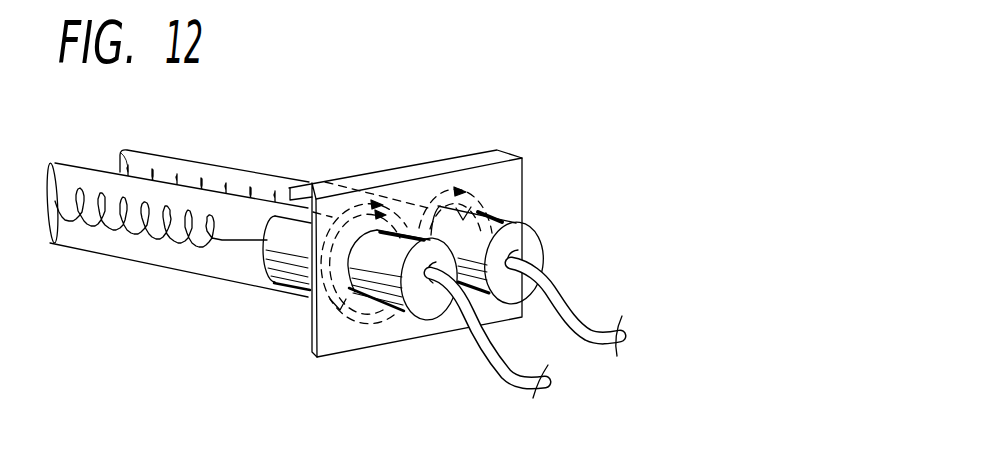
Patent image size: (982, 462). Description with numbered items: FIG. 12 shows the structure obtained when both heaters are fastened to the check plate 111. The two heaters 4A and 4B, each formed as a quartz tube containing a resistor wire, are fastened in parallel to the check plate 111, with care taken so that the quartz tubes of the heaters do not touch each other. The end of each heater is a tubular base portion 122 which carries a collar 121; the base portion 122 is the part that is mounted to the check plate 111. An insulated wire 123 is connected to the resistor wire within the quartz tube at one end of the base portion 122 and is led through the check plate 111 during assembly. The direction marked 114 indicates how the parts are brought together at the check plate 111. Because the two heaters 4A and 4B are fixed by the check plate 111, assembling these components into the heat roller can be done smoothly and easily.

The heater 4A is at (250, 167).
The heater 4B is at (167, 268).
The check plate 111 is at (513, 183).
The rotation direction arrow 114 is at (472, 208).
The collar 121 is at (308, 337).
The base portion 122 is at (422, 310).
The insulated wire 123 is at (558, 296).